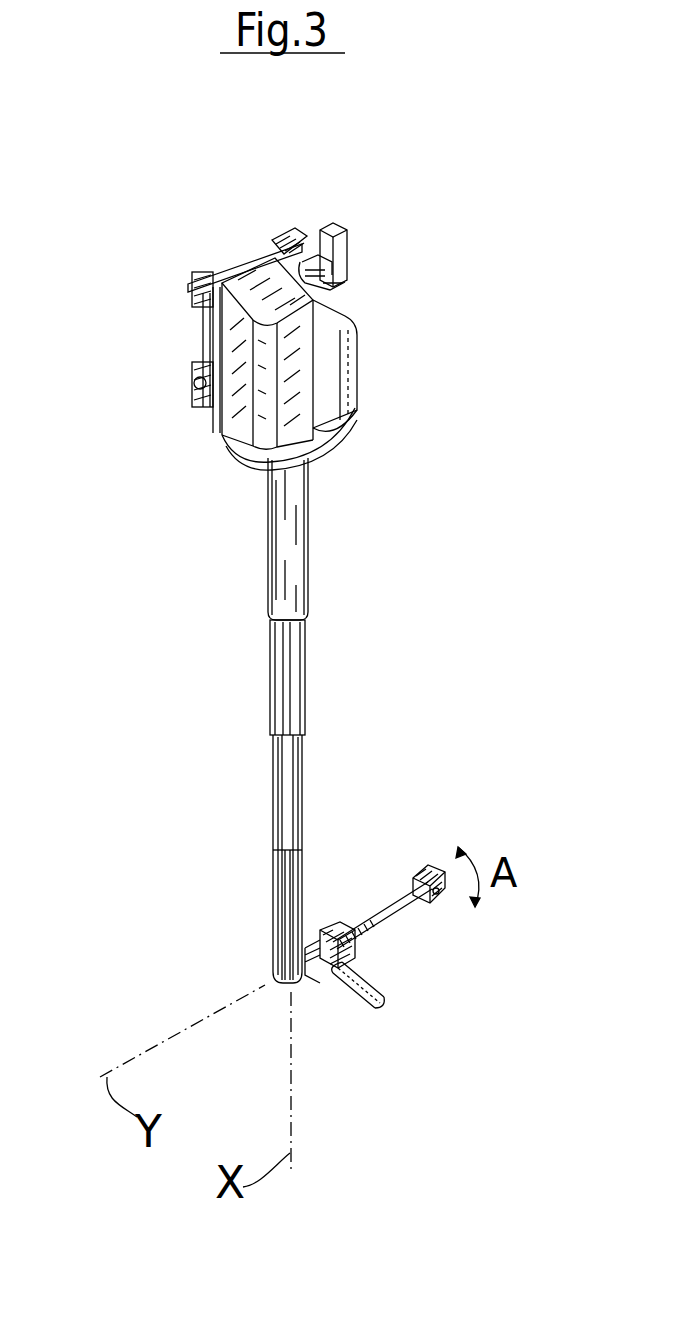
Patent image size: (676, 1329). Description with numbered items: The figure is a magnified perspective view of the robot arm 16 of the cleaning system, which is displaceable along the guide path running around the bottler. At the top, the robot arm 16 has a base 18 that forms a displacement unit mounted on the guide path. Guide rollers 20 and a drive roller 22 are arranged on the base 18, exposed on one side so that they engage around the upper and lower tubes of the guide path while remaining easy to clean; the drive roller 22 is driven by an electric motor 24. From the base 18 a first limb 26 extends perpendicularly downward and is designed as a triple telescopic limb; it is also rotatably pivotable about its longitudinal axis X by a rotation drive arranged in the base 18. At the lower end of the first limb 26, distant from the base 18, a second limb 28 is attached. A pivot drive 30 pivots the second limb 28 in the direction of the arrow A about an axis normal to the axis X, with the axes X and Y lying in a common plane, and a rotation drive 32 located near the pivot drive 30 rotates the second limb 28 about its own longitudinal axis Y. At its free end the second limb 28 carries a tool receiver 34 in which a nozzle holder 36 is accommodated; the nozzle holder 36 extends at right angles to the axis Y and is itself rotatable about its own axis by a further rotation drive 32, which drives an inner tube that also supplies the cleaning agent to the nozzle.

The robot arm 16 is at (323, 617).
The base 18 is at (298, 383).
The guide rollers 20 is at (203, 312).
The drive roller 22 is at (288, 230).
The electric motor 24 is at (345, 285).
The first limb 26 is at (277, 565).
The second limb 28 is at (393, 900).
The pivot drive 30 is at (347, 1003).
The rotation drive 32 is at (370, 937).
The tool receiver 34 is at (437, 893).
The nozzle holder 36 is at (437, 863).